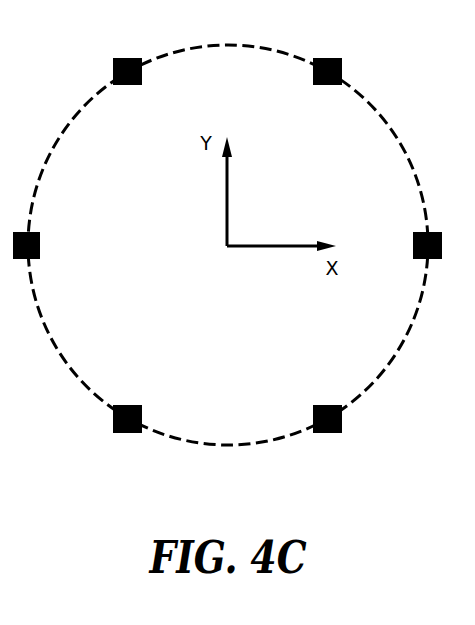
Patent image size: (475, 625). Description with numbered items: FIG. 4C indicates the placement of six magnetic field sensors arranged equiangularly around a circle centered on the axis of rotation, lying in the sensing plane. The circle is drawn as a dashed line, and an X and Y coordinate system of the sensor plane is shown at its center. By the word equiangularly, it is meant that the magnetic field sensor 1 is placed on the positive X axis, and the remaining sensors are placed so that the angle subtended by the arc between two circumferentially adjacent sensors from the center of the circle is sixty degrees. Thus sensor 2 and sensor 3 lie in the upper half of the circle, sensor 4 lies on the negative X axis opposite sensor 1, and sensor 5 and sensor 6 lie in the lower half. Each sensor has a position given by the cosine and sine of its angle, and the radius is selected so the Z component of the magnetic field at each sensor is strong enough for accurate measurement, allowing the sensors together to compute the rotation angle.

The magnetic field sensor 1 is at (436, 245).
The magnetic field sensor 2 is at (327, 59).
The magnetic field sensor 3 is at (127, 59).
The magnetic field sensor 4 is at (35, 245).
The magnetic field sensor 5 is at (127, 433).
The magnetic field sensor 6 is at (327, 433).